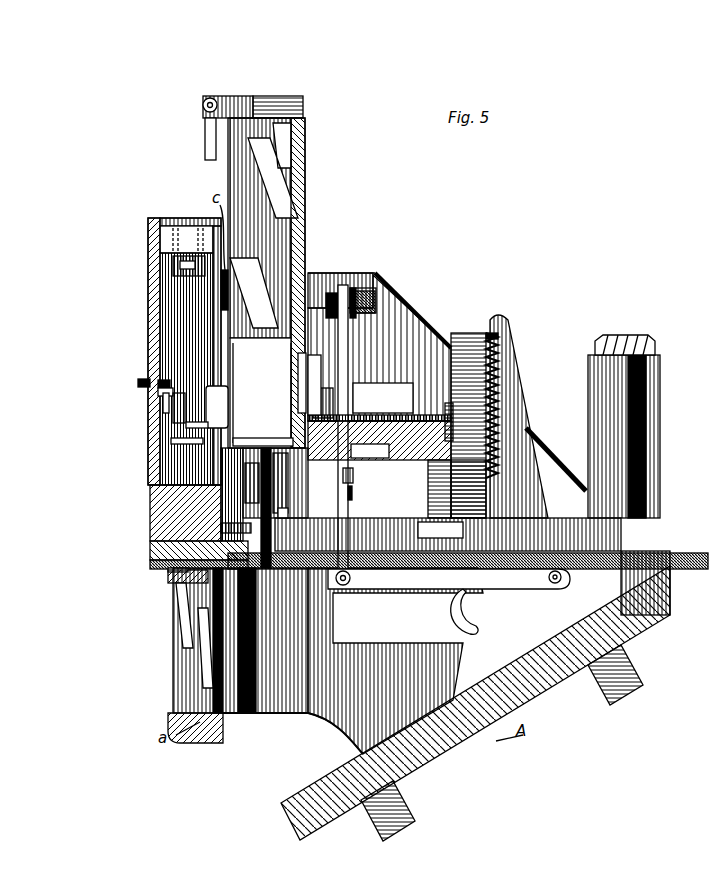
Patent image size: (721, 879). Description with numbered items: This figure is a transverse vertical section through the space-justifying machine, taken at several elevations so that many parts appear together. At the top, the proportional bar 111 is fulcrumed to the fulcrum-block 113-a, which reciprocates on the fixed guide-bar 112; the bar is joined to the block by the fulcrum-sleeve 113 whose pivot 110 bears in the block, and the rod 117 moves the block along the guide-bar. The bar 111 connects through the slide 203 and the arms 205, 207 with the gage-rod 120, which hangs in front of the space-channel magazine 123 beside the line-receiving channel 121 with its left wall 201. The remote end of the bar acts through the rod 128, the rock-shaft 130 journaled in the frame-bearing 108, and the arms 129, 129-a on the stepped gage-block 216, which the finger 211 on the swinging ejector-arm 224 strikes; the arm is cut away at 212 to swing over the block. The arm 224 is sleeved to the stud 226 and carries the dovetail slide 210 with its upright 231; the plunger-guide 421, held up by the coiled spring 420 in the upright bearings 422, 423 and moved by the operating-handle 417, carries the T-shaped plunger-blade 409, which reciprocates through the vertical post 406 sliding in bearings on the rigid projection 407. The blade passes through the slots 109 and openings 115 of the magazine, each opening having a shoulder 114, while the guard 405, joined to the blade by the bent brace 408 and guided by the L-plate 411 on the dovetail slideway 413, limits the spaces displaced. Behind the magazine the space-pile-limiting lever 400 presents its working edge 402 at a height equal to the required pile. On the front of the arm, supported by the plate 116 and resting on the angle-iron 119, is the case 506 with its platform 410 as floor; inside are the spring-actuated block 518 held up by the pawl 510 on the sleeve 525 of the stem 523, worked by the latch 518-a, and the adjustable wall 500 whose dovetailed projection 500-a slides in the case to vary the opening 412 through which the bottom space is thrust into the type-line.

The slide-arm 207 is at (243, 90).
The slide 203 is at (296, 84).
The gage-rod 120 is at (197, 125).
The space-channel magazine 123 is at (235, 167).
The adjustable wall 500 is at (152, 212).
The dovetailed projection 500-a is at (172, 255).
The case 506 is at (142, 313).
The dovetail slideway 413 is at (200, 380).
The sleeve 525 is at (150, 373).
The latch 518-a is at (130, 375).
The stem 523 is at (150, 384).
The pawl 510 is at (156, 390).
The spring-actuated block 518 is at (165, 402).
The L-plate 411 is at (195, 418).
The opening 412 is at (190, 433).
The platform 410 is at (165, 480).
The line-receiving channel 121 is at (215, 490).
The finger 211 is at (215, 520).
The plate 116 is at (150, 540).
The angle-iron 119 is at (150, 555).
The cut-away 212 is at (160, 563).
The stepped gage-block 216 is at (160, 571).
The left wall 201 is at (170, 640).
The frame-bearing 108 is at (530, 645).
The arm 205 is at (312, 265).
The fulcrum-sleeve 113 is at (382, 305).
The guide-bar 112 is at (395, 290).
The rod 117 is at (334, 277).
The proportional bar 111 is at (345, 280).
The pivot 110 is at (356, 283).
The fulcrum-block 113-a is at (350, 292).
The space-pile-limiting lever 400 is at (320, 390).
The T-shaped plunger-blade 409 is at (345, 410).
The working edge 402 is at (379, 441).
The rigid projection 407 is at (345, 465).
The rod 128 is at (344, 480).
The dovetail slide 210 is at (408, 489).
The upright bearing 422 is at (460, 505).
The bent bar or brace 408 is at (260, 483).
The openings 115 is at (289, 483).
The vertical post 406 is at (280, 498).
The slots 109 is at (285, 383).
The guard 405 is at (300, 400).
The shoulder 114 is at (285, 432).
The upright bearing 423 is at (455, 325).
The coiled spring 420 is at (490, 395).
The plunger-guide 421 is at (482, 325).
The upright 231 is at (505, 365).
The stud 226 is at (620, 327).
The swinging ejector-arm 224 is at (475, 522).
The arm 129 is at (415, 582).
The arm 129-a is at (340, 578).
The rock-shaft 130 is at (472, 590).
The operating-handle 417 is at (455, 615).